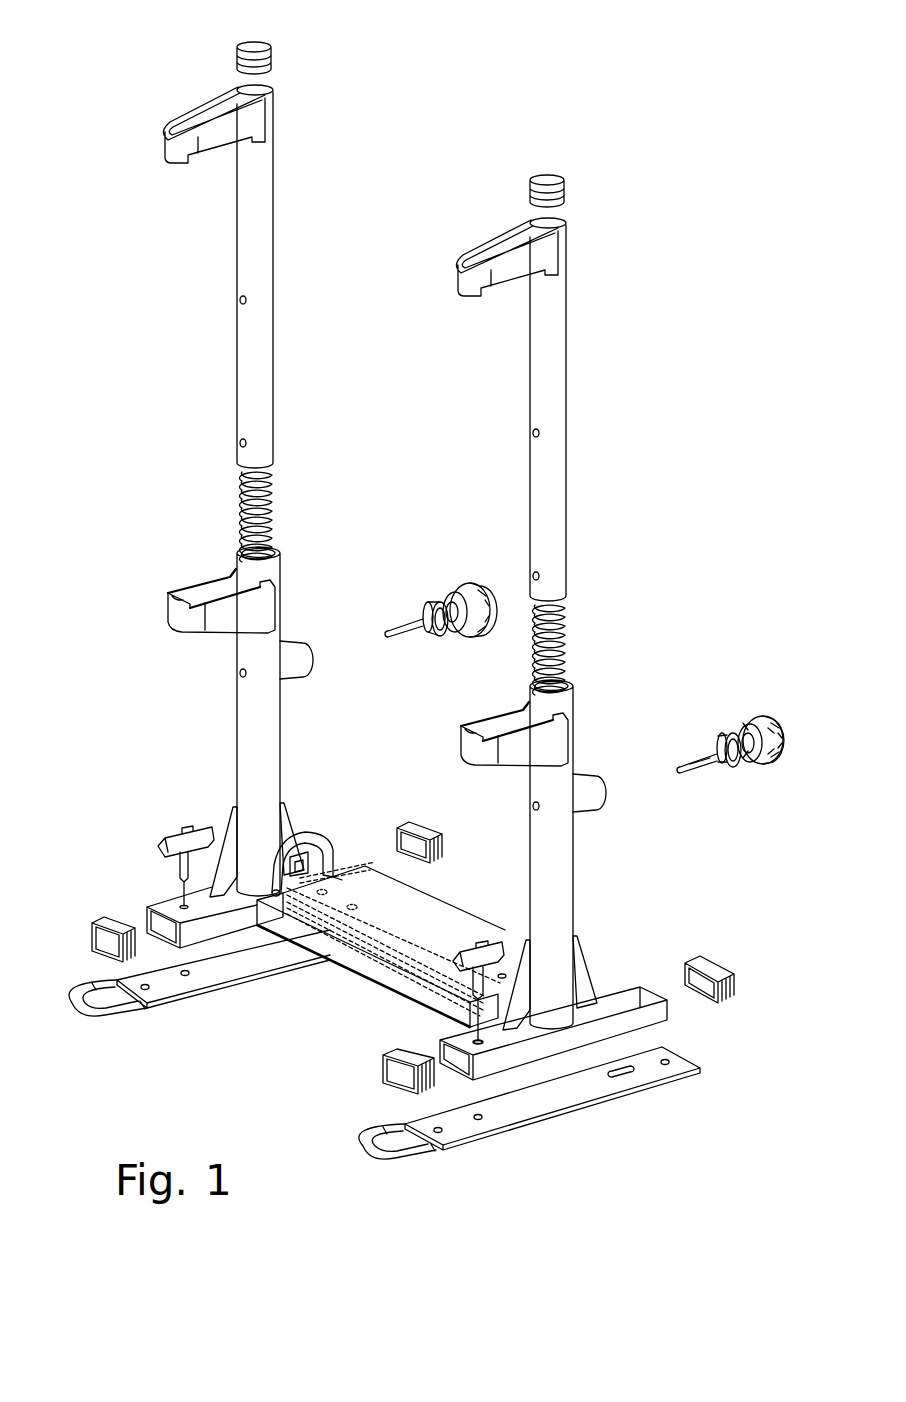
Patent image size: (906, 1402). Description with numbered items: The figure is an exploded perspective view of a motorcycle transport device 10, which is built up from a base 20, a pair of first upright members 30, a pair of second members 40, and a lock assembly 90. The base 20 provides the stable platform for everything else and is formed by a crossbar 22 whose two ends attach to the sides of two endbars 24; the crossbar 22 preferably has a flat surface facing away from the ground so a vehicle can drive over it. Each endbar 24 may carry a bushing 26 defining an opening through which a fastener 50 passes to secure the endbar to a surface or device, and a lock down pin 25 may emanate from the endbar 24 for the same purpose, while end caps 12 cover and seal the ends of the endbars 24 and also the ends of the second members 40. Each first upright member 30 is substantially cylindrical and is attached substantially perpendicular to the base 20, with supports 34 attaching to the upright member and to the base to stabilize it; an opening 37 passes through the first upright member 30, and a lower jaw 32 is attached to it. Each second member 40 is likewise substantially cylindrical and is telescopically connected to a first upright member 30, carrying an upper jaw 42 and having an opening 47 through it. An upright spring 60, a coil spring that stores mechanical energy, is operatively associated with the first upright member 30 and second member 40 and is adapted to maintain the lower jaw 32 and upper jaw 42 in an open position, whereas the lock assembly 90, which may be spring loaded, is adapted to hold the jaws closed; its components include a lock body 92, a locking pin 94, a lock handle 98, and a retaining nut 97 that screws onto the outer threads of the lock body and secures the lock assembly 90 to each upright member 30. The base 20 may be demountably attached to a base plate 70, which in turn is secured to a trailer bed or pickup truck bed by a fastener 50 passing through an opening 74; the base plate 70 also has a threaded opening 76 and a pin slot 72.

The motorcycle transport device 10 is at (165, 302).
The end caps 12 is at (268, 55).
The base 20 is at (335, 960).
The crossbar 22 is at (392, 975).
The endbar 24 is at (157, 905).
The lock down pin 25 is at (625, 990).
The bushing 26 is at (474, 1042).
The first upright member 30 is at (243, 741).
The lower jaw 32 is at (215, 594).
The supports 34 is at (585, 980).
The opening 37 is at (240, 672).
The second member 40 is at (530, 412).
The upper jaw 42 is at (215, 105).
The opening 47 is at (240, 443).
The fastener 50 is at (160, 842).
The upright spring 60 is at (540, 618).
The base plate 70 is at (437, 1123).
The pin slot 72 is at (624, 1078).
The opening 74 is at (445, 1132).
The threaded opening 76 is at (482, 1118).
The lock assembly 90 is at (462, 598).
The lock body 92 is at (772, 764).
The locking pin 94 is at (700, 770).
The retaining nut 97 is at (722, 745).
The lock handle 98 is at (784, 746).